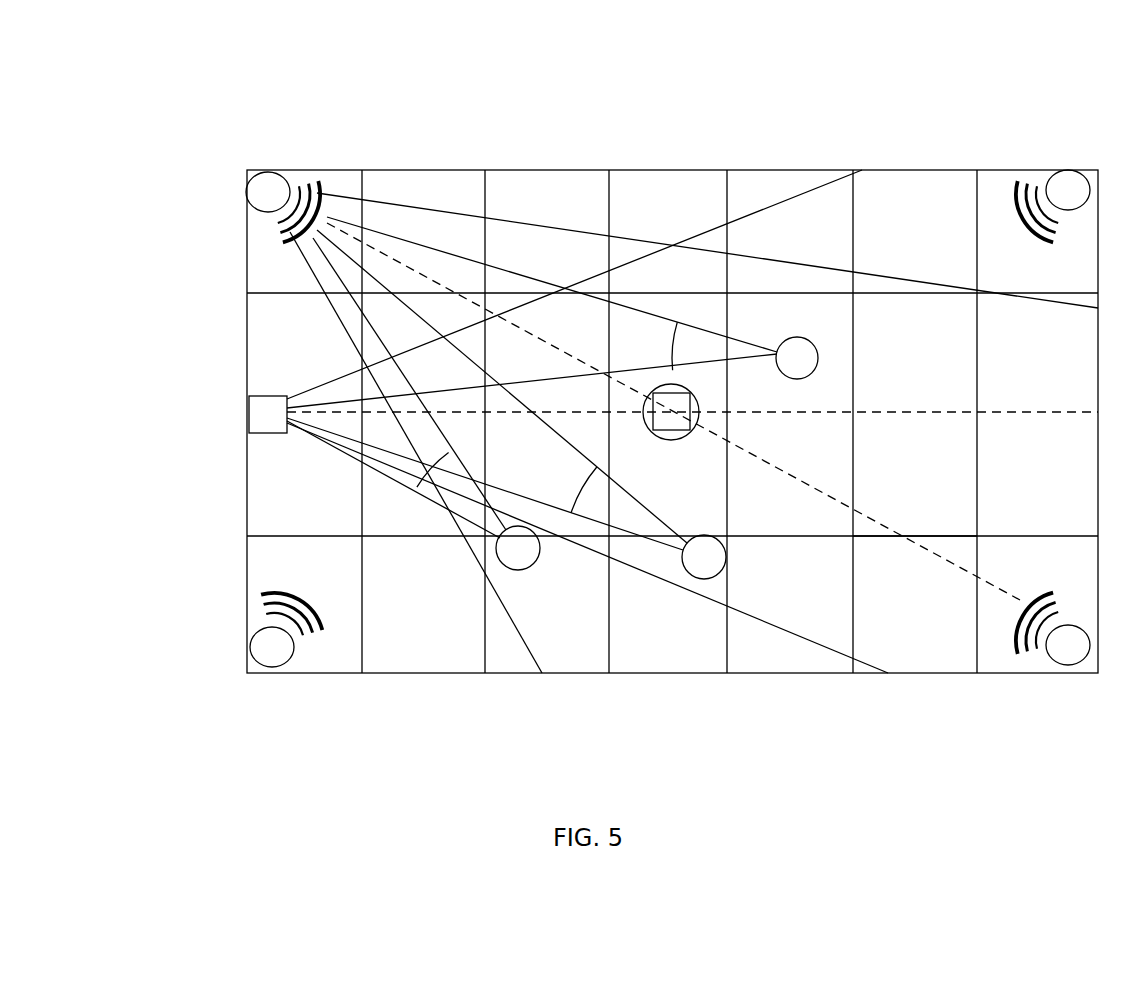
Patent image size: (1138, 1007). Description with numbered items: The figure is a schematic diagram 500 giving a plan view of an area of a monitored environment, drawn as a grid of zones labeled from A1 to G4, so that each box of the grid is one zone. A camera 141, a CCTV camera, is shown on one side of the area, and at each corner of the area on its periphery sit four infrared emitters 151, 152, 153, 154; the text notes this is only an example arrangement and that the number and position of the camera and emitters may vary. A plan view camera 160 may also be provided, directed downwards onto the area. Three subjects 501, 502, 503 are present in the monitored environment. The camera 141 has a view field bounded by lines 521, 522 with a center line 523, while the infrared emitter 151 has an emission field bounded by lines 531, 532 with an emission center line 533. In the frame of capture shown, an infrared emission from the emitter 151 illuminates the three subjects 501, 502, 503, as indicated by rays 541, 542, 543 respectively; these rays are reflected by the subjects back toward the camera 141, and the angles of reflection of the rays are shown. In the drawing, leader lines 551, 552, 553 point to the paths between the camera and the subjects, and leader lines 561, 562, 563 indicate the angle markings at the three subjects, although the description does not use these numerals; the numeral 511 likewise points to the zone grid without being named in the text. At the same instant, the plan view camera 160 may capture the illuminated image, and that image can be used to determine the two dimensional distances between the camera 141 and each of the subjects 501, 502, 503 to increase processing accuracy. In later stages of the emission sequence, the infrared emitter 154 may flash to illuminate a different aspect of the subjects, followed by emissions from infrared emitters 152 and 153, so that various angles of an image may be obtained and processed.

The schematic diagram 500 is at (126, 132).
The camera 141 is at (275, 433).
The infrared emitter 151 is at (266, 172).
The infrared emitter 152 is at (1060, 172).
The infrared emitter 153 is at (1068, 668).
The infrared emitter 154 is at (263, 655).
The plan view camera 160 is at (692, 428).
The subject 501 is at (527, 568).
The subject 502 is at (712, 578).
The subject 503 is at (790, 337).
The grid 511 is at (427, 617).
The view field line 521 is at (609, 265).
The view field line 522 is at (840, 648).
The center line 523 is at (920, 410).
The emission field line 531 is at (458, 212).
The emission field line 532 is at (323, 292).
The emission center line 533 is at (388, 255).
The ray 541 is at (418, 393).
The ray 542 is at (567, 443).
The ray 543 is at (423, 248).
The controller-to-sensor line 551 is at (400, 480).
The controller-to-sensor line 552 is at (665, 546).
The controller-to-sensor line 553 is at (530, 383).
The angle a 561 is at (442, 460).
The angle a 562 is at (580, 492).
The angle a 563 is at (681, 368).